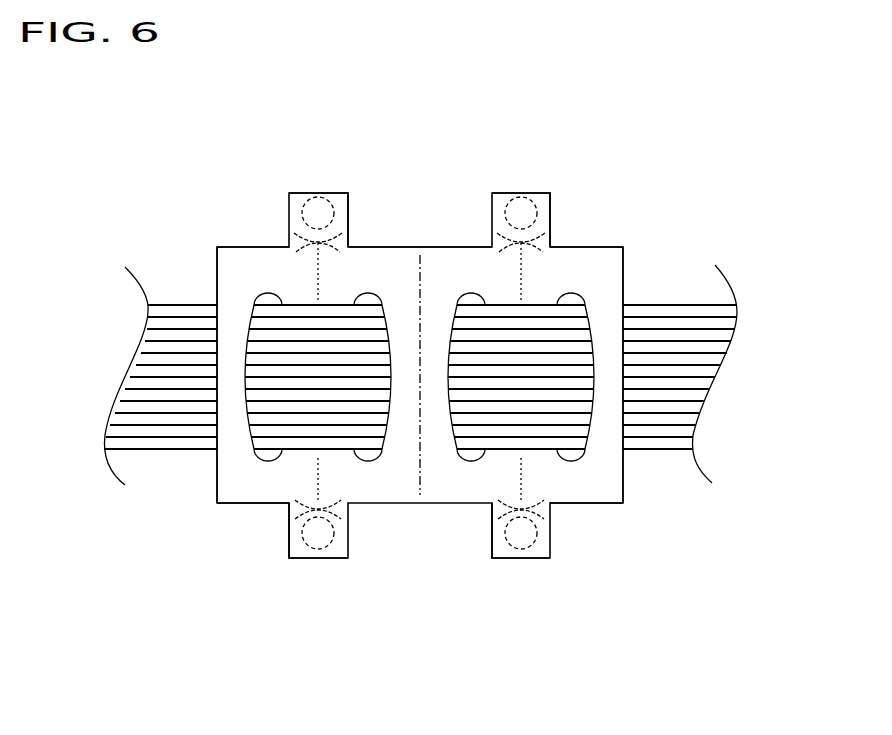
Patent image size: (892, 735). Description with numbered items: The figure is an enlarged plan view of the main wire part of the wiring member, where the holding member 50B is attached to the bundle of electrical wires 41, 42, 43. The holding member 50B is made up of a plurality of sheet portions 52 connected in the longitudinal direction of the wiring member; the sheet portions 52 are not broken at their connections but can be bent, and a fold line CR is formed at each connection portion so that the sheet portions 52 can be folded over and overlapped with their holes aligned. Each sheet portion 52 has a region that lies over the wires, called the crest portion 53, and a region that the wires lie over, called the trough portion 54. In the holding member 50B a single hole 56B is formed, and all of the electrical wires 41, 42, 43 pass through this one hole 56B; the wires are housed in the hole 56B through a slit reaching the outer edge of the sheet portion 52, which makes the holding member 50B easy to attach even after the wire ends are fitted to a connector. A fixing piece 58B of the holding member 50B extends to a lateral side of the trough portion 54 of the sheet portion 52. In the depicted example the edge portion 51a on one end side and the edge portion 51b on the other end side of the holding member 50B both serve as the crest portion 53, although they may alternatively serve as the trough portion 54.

The holding member 50B is at (209, 493).
The edge portion 51a is at (217, 262).
The edge portion 51b is at (623, 262).
The sheet portion 52 is at (238, 268).
The crest portion 53 is at (432, 268).
The trough portion 54 is at (310, 265).
The hole 56B is at (277, 458).
The fixing piece 58B is at (320, 192).
The fold line CR is at (320, 460).
The electrical wire 41 is at (673, 382).
The electrical wire 42 is at (692, 523).
The electrical wire 43 is at (692, 523).